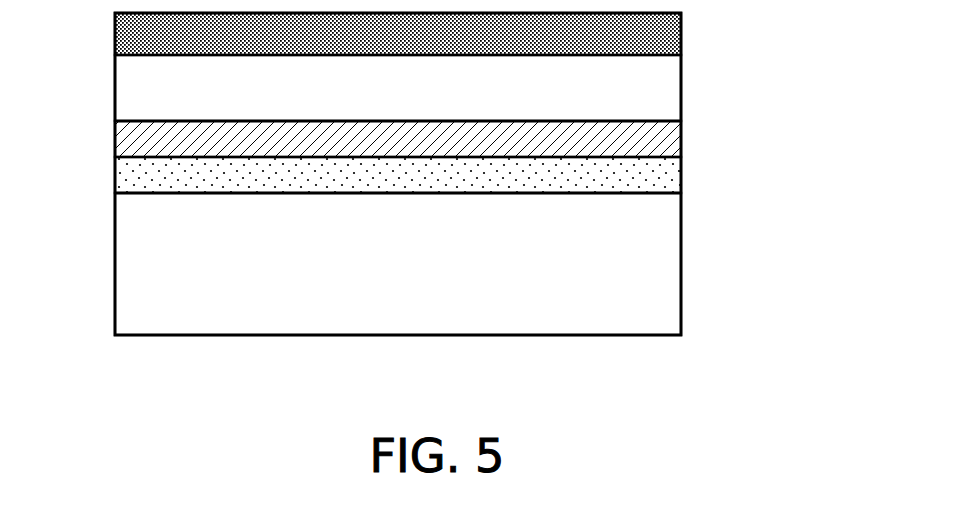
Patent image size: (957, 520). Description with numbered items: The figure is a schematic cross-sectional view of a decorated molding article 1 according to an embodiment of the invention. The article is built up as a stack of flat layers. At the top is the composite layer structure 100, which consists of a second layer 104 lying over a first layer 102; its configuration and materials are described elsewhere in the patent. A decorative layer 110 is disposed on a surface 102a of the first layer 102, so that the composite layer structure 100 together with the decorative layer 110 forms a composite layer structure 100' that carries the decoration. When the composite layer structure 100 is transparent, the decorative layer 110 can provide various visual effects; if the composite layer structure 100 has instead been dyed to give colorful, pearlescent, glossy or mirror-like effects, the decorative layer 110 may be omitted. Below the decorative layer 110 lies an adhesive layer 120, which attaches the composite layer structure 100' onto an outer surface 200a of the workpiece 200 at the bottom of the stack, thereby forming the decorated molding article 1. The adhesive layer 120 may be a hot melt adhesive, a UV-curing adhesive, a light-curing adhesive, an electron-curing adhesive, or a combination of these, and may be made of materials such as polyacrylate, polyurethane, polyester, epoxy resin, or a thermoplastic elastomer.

The decorated molding article 1 is at (777, 396).
The composite layer structure 100 is at (466, 67).
The composite layer structure having the decorative layer 100' is at (500, 85).
The first layer 102 is at (657, 90).
The surface of the first layer 102a is at (148, 122).
The second layer 104 is at (657, 36).
The decorative layer 110 is at (657, 140).
The adhesive layer 120 is at (657, 177).
The workpiece 200 is at (655, 271).
The outer surface of the workpiece 200a is at (148, 194).